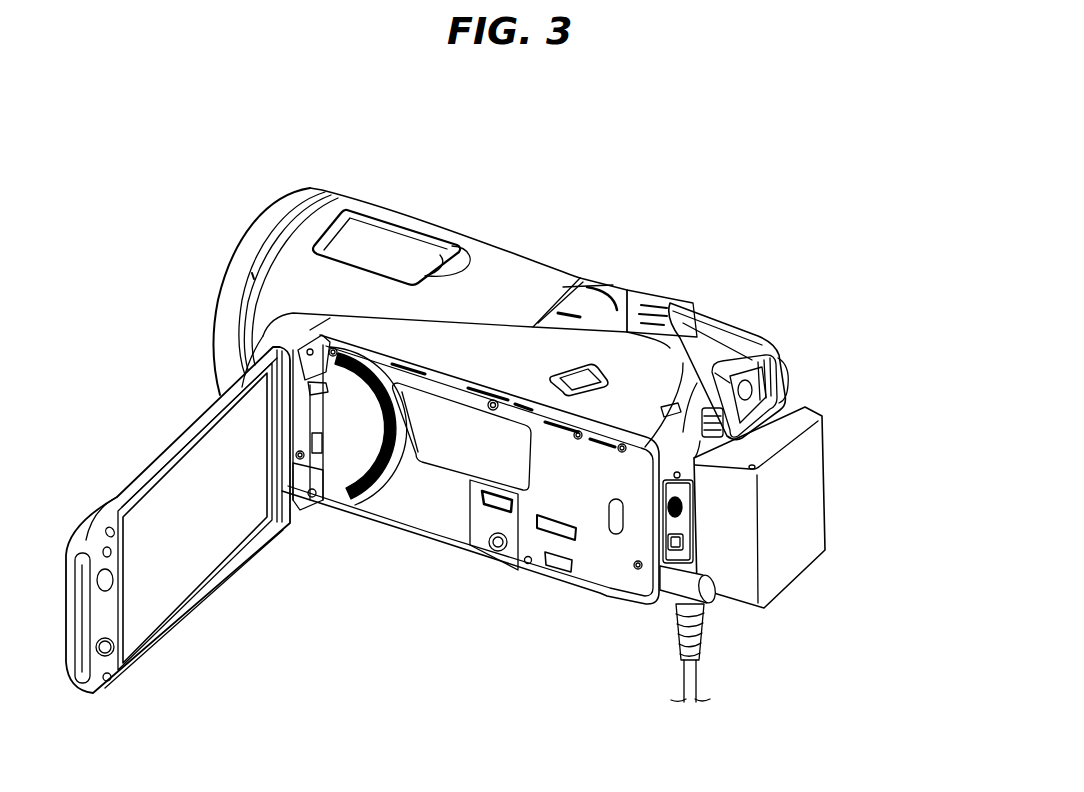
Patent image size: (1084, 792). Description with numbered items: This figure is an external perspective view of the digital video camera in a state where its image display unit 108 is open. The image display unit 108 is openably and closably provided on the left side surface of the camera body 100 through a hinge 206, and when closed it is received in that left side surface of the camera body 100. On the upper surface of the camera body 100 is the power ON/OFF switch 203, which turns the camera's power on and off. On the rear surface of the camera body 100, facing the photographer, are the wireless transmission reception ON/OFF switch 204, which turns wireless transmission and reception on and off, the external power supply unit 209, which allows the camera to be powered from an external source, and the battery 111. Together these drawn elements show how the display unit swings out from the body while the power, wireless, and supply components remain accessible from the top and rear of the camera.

The camera body 100 is at (500, 268).
The power ON/OFF switch 203 is at (587, 368).
The hinge 206 is at (320, 442).
The wireless transmission reception ON/OFF switch 204 is at (683, 505).
The external power supply unit 209 is at (714, 598).
The battery 111 is at (815, 498).
The image display unit 108 is at (185, 567).